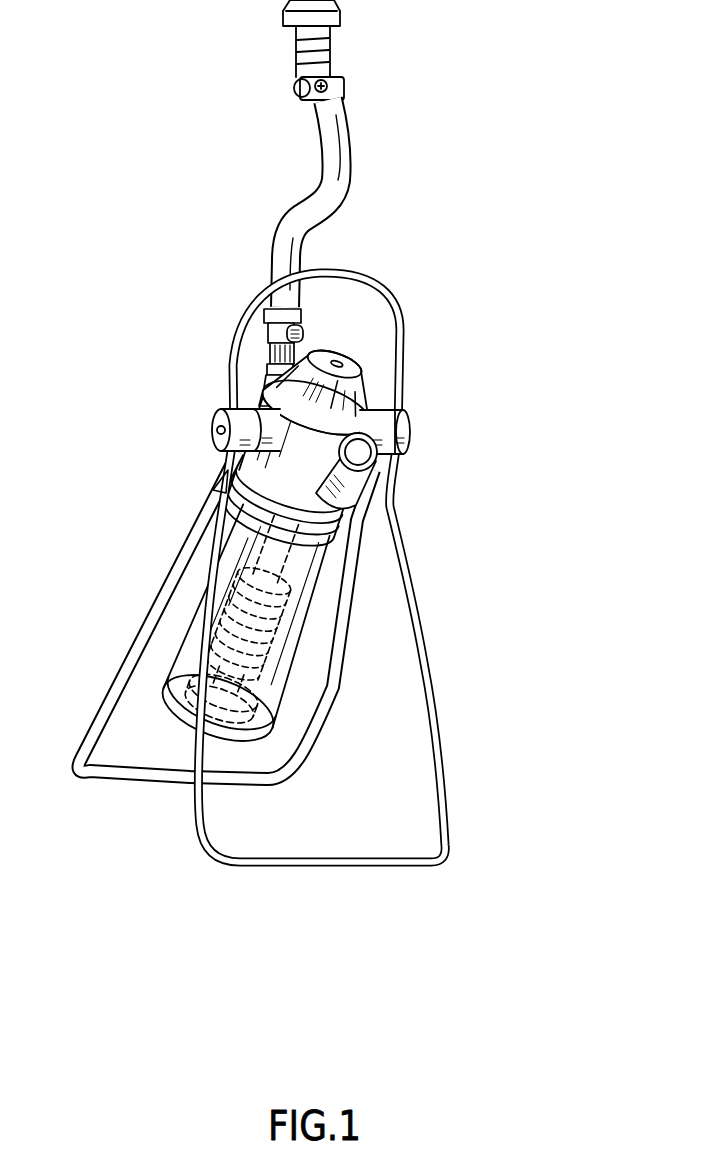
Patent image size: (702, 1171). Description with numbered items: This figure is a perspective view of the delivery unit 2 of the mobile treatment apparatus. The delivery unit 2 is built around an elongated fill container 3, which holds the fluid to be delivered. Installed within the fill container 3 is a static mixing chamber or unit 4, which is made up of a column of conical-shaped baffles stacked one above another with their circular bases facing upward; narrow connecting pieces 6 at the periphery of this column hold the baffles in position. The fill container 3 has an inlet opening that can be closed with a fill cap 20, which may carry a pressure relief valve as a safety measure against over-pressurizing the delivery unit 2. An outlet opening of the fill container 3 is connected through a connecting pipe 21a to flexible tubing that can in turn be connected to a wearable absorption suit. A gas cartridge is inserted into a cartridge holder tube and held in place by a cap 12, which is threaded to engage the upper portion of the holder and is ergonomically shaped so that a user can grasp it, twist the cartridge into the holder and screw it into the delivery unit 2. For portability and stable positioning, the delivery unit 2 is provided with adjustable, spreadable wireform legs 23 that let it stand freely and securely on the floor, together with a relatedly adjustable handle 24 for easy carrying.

The delivery unit 2 is at (444, 418).
The fill container 3 is at (206, 598).
The static mixing chamber or unit 4 is at (257, 680).
The narrow connecting pieces 6 is at (290, 655).
The cap 12 is at (265, 371).
The fill cap 20 is at (384, 461).
The connecting pipe 21a is at (351, 125).
The wireform legs 23 is at (446, 779).
The handle 24 is at (384, 278).